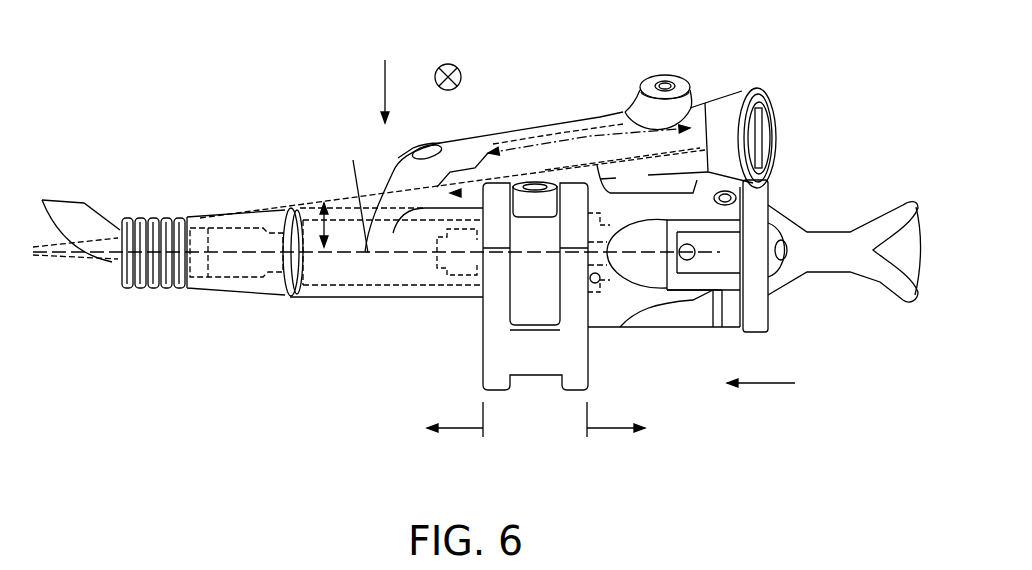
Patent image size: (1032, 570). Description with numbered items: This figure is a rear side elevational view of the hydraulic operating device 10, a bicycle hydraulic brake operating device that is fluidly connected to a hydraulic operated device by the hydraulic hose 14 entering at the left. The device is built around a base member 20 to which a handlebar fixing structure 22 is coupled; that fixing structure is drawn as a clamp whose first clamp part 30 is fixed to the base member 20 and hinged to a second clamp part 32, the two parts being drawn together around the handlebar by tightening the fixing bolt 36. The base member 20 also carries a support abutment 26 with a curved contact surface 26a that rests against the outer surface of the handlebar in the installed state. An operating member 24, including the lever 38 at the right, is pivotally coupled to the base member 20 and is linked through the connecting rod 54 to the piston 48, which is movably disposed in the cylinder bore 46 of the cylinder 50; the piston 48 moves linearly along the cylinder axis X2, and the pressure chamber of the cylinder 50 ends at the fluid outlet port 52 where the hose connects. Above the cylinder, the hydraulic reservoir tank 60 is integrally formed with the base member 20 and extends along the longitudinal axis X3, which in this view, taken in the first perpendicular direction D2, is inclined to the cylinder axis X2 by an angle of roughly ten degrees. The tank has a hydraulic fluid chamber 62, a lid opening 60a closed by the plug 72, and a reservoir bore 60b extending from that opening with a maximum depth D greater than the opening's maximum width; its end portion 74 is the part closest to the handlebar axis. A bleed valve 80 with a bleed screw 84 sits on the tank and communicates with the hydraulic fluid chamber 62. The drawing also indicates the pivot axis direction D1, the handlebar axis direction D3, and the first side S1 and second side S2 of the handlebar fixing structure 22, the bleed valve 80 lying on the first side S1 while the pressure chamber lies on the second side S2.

The hydraulic operating device 10 is at (215, 90).
The hydraulic hose 14 is at (82, 228).
The base member 20 is at (667, 332).
The handlebar fixing structure 22 is at (480, 363).
The operating member 24 is at (850, 213).
The support abutment 26 is at (738, 305).
The curved contact surface 26a is at (755, 287).
The first clamp part 30 is at (482, 322).
The second clamp part 32 is at (440, 236).
The fixing bolt 36 is at (663, 173).
The lever 38 is at (880, 283).
The cylinder bore 46 is at (385, 298).
The piston 48 is at (530, 287).
The cylinder 50 is at (343, 298).
The fluid outlet port 52 is at (293, 297).
The connecting rod 54 is at (635, 268).
The hydraulic reservoir tank 60 is at (485, 135).
The lid opening 60a is at (768, 107).
The reservoir bore 60b is at (523, 133).
The hydraulic fluid chamber 62 is at (600, 123).
The plug 72 is at (765, 118).
The end portion 74 is at (773, 167).
The bleed valve 80 is at (645, 72).
The bleed screw 84 is at (682, 77).
The maximum depth D is at (555, 157).
The pivot axis direction D1 is at (385, 77).
The first perpendicular direction D2 is at (462, 66).
The handlebar axis direction D3 is at (770, 383).
The first side S1 is at (608, 428).
The second side S2 is at (460, 428).
The cylinder axis X2 is at (235, 255).
The longitudinal axis X3 is at (353, 195).